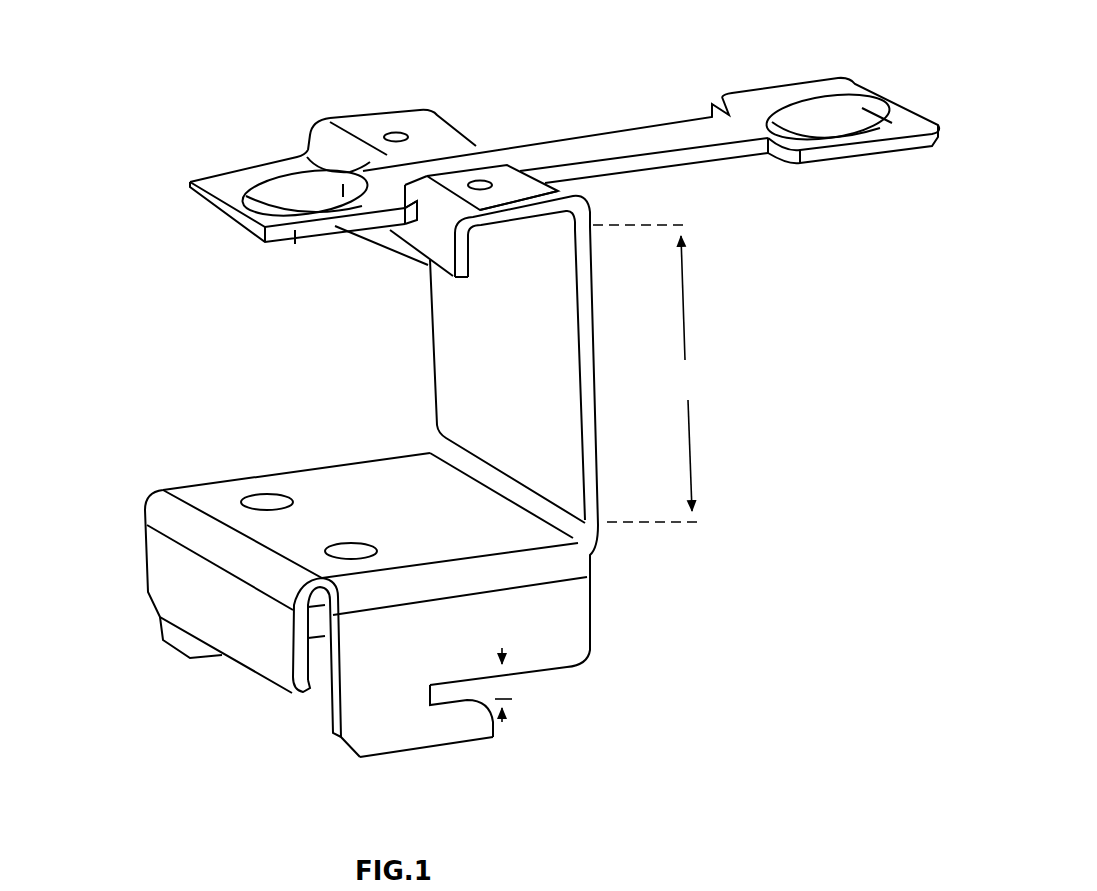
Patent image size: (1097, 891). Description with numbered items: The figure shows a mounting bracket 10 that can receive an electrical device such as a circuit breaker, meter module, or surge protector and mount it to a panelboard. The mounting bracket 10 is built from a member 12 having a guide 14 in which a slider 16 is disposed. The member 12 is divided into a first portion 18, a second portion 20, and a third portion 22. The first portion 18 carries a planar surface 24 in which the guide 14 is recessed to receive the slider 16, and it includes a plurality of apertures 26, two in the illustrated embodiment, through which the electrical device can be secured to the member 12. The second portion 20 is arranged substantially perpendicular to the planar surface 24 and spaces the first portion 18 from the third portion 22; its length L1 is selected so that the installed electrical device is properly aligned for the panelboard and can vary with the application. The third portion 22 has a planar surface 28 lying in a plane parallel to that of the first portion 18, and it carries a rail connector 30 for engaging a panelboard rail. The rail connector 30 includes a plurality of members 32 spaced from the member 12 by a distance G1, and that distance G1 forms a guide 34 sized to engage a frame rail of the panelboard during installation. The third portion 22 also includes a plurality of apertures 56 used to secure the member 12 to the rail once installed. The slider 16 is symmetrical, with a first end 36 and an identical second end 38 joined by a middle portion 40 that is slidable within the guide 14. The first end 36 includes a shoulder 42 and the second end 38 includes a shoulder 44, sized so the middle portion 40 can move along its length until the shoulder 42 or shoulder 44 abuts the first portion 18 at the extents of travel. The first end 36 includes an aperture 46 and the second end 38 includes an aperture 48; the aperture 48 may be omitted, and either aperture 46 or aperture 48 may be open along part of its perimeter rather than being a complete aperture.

The mounting bracket 10 is at (124, 80).
The member 12 is at (485, 377).
The guide 14 is at (494, 138).
The slider 16 is at (659, 129).
The first portion 18 is at (300, 132).
The second portion 20 is at (424, 326).
The third portion 22 is at (326, 616).
The planar surface 24 is at (370, 122).
The plurality of apertures 26 is at (478, 180).
The planar surface 28 is at (277, 534).
The rail connector 30 is at (480, 746).
The plurality of members 32 is at (402, 737).
The guide 34 is at (366, 706).
The first end 36 is at (839, 129).
The second end 38 is at (304, 150).
The middle portion 40 is at (690, 132).
The shoulder 42 is at (766, 163).
The shoulder 44 is at (403, 195).
The aperture 46 is at (868, 104).
The aperture 48 is at (288, 207).
The plurality of apertures 56 is at (260, 487).
The length L1 is at (646, 373).
The distance G1 is at (495, 690).